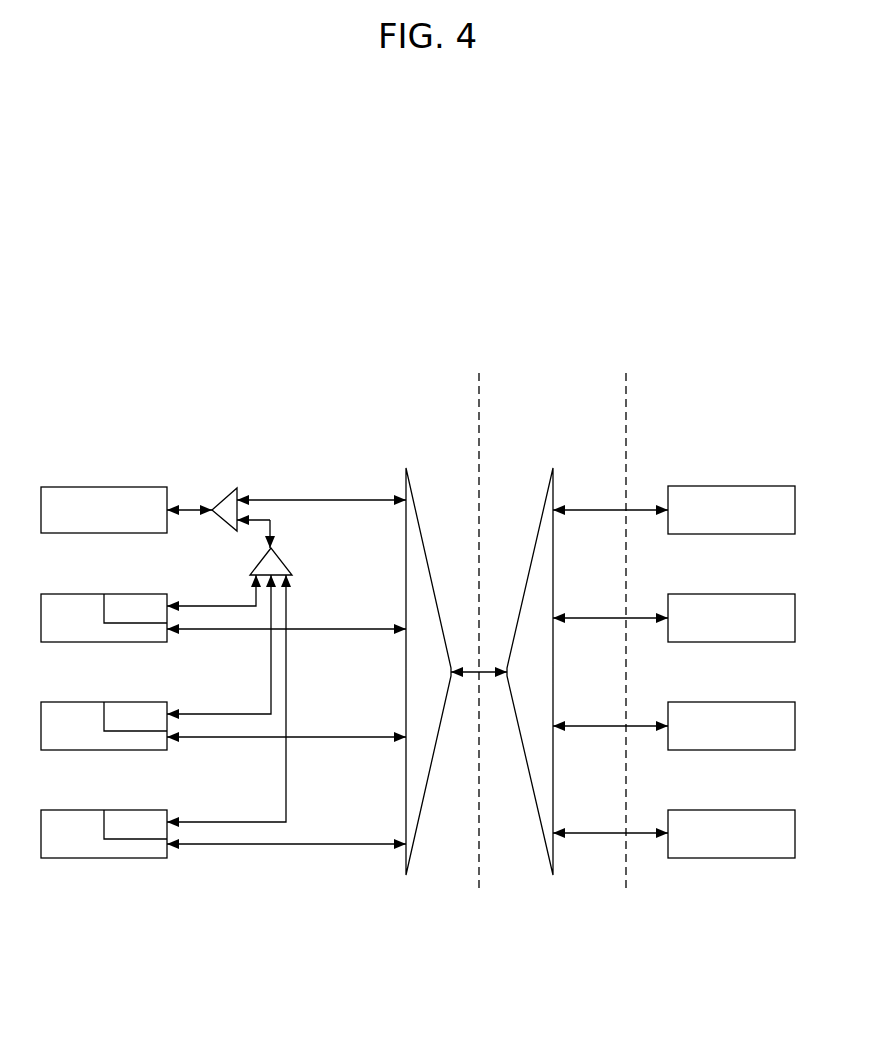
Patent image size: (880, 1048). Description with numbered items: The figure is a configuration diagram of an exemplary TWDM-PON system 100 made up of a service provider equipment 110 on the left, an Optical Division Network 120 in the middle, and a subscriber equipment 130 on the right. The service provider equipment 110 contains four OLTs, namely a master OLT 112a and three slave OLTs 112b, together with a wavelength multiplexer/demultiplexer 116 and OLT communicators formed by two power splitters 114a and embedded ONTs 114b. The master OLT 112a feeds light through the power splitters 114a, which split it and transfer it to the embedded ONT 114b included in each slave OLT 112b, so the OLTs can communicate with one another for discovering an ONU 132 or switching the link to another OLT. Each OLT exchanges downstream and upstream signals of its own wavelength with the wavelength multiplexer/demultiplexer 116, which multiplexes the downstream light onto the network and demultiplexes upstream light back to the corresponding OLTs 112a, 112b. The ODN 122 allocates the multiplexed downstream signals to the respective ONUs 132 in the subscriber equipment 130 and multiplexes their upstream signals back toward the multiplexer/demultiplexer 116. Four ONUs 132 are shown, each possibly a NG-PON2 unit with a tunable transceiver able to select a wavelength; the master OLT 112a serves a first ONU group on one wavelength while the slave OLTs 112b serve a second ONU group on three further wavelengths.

The TWDM-PON system 100 is at (560, 282).
The service provider equipment 110 is at (267, 399).
The master OLT 112a is at (79, 487).
The slave OLT 112b is at (79, 593).
The power splitter 114a is at (222, 487).
The embedded ONT 114b is at (140, 594).
The wavelength multiplexer/demultiplexer 116 is at (422, 536).
The Optical Division Network 120 is at (569, 399).
The ODN 122 is at (536, 536).
The subscriber equipment 130 is at (732, 399).
The ONU 132 is at (732, 486).